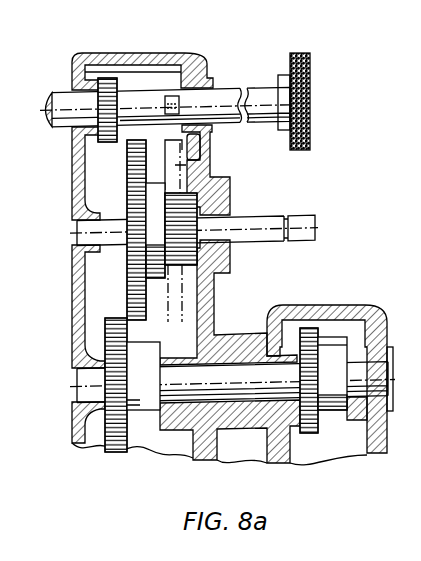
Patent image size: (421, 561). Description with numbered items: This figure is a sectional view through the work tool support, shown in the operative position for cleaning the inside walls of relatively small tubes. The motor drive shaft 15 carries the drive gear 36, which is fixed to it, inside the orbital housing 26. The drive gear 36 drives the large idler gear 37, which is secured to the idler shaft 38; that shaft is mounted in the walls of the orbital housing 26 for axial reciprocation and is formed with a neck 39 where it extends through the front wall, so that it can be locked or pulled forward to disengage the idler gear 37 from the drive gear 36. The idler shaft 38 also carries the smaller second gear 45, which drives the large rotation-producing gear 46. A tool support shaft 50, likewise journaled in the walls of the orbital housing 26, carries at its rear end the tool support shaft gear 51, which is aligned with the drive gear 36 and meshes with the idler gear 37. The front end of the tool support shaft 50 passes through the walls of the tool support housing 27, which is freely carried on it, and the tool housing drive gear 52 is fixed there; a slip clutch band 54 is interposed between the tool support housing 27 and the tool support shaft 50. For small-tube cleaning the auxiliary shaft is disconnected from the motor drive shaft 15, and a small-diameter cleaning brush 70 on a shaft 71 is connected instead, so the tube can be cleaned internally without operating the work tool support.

The motor drive shaft 15 is at (50, 92).
The orbital housing 26 is at (167, 54).
The tool support housing 27 is at (378, 318).
The drive gear 36 is at (104, 80).
The idler gear 37 is at (127, 180).
The idler shaft 38 is at (75, 233).
The neck 39 is at (287, 238).
The second gear 45 is at (228, 262).
The rotation-producing gear 46 is at (193, 155).
The tool support shaft 50 is at (231, 412).
The tool support shaft gear 51 is at (117, 452).
The tool housing drive gear 52 is at (311, 433).
The slip clutch band 54 is at (328, 338).
The cleaning brush 70 is at (311, 76).
The shaft 71 is at (260, 90).